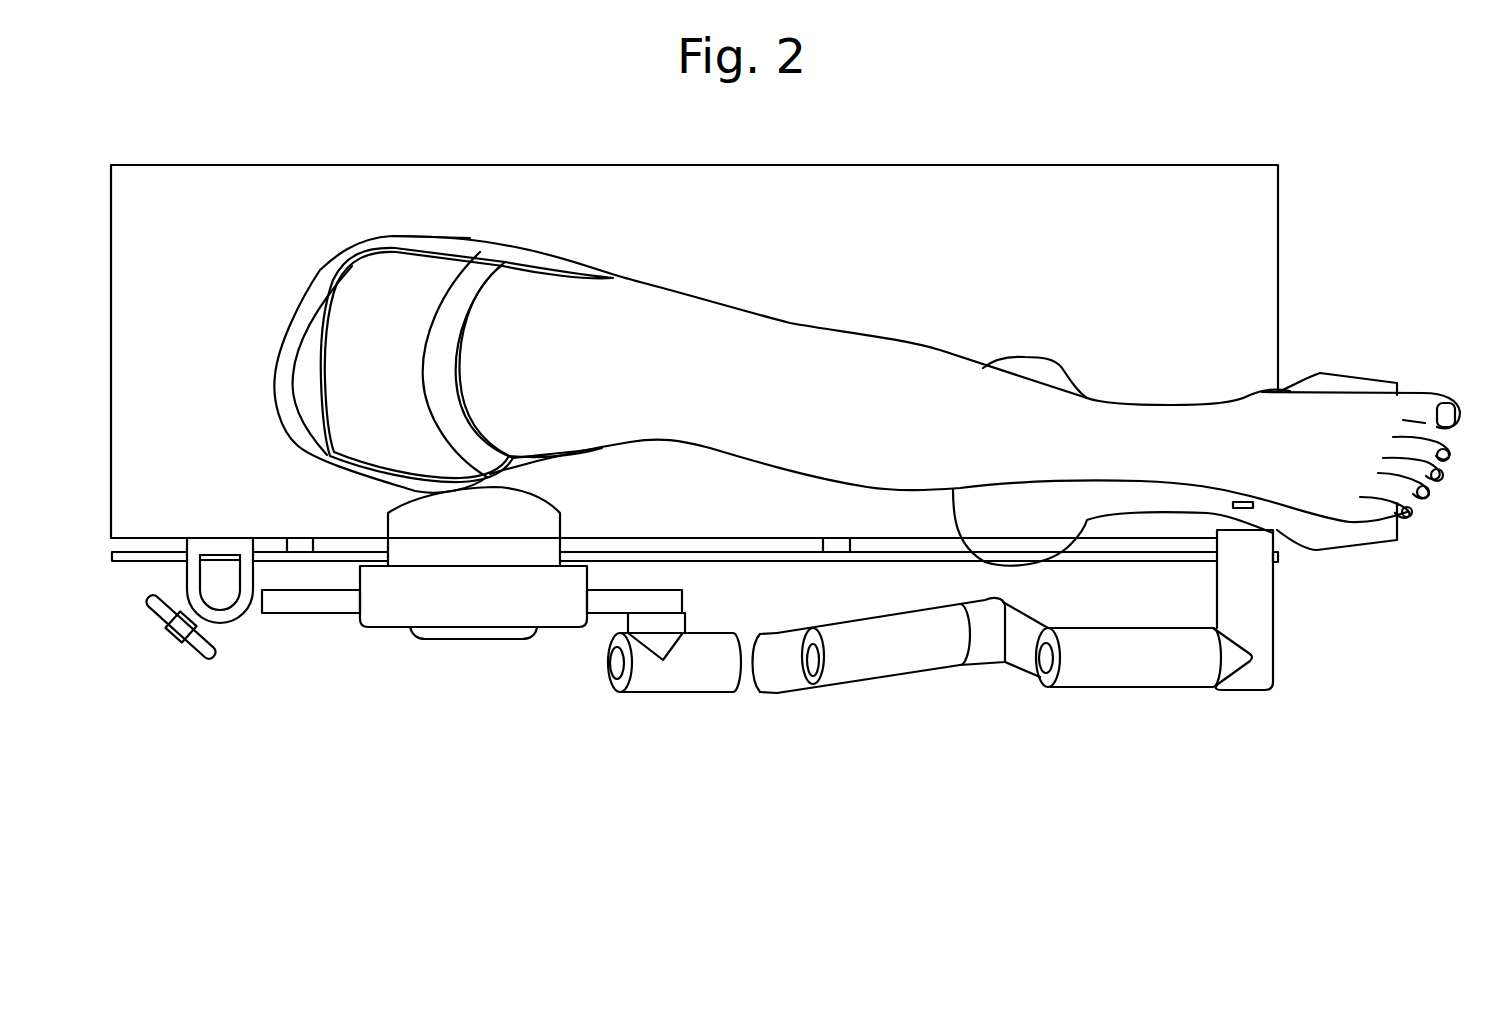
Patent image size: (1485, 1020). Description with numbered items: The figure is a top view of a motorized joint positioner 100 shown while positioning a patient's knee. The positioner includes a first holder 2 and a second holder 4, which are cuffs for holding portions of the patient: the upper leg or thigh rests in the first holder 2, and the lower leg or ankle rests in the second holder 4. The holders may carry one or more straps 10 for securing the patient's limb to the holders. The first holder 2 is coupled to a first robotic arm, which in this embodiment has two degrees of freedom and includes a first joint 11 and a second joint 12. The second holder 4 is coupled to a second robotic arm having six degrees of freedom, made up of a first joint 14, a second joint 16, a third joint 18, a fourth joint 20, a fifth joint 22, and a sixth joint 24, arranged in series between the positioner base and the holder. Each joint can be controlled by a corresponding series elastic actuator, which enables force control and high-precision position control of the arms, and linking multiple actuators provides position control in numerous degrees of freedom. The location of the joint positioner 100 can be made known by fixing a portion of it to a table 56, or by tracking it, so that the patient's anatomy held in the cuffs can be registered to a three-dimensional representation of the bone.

The first holder 2 is at (507, 252).
The second holder 4 is at (1352, 385).
The strap 10 is at (445, 330).
The first joint 11 is at (475, 641).
The second joint 12 is at (493, 535).
The first joint 14 is at (665, 664).
The second joint 16 is at (740, 666).
The third joint 18 is at (891, 657).
The fourth joint 20 is at (1018, 648).
The fifth joint 22 is at (1130, 668).
The sixth joint 24 is at (1257, 665).
The table 56 is at (1262, 215).
The motorized joint positioner 100 is at (945, 805).